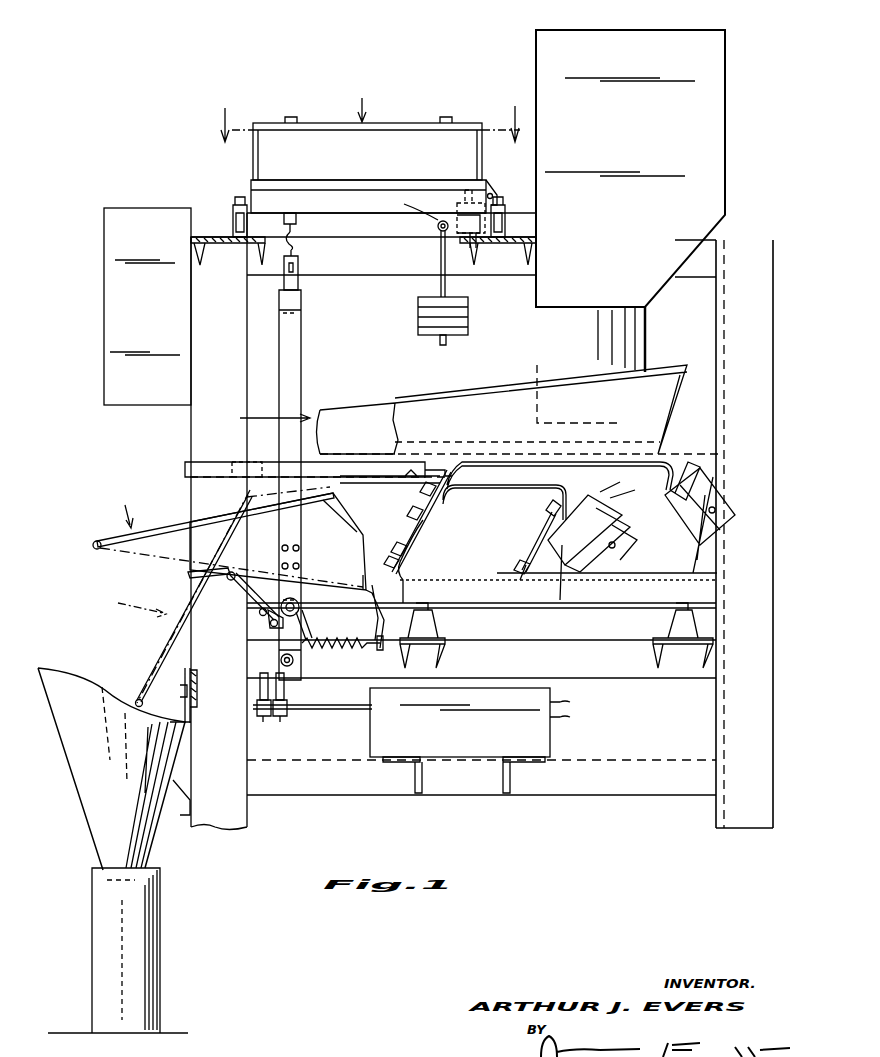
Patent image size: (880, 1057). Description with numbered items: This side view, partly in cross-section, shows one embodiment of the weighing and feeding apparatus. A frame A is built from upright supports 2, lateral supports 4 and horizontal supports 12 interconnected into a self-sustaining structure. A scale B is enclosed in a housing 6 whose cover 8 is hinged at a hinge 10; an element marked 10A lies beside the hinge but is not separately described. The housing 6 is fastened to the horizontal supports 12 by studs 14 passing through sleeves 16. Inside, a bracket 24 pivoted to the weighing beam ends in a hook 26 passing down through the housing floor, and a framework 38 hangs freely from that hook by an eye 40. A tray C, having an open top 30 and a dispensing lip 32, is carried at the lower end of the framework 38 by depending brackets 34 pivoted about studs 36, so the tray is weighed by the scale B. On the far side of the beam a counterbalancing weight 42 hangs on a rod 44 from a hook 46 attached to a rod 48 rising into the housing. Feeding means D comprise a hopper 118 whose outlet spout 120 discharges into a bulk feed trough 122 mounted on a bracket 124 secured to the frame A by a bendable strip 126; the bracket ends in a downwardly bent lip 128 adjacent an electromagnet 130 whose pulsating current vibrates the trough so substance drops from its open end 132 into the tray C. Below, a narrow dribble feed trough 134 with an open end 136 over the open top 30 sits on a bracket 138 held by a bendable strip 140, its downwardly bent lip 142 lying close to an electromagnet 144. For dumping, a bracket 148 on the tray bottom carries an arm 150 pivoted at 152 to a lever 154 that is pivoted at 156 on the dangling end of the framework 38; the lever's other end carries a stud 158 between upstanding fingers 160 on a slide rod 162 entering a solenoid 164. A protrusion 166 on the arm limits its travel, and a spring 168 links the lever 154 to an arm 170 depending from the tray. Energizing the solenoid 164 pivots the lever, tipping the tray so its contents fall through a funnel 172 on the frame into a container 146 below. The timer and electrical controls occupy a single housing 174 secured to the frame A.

The upright supports 2 is at (716, 818).
The lateral supports 4 is at (624, 670).
The housing 6 is at (262, 196).
The cover 8 is at (393, 142).
The hinge 10 is at (496, 192).
The switch box 10A is at (470, 240).
The horizontal supports 12 is at (226, 246).
The studs 14 is at (232, 205).
The sleeves 16 is at (234, 222).
The bracket 24 is at (298, 220).
The hook 26 is at (296, 238).
The open top 30 is at (168, 520).
The dispensing lip 32 is at (94, 550).
The depending brackets 34 is at (318, 595).
The studs 36 is at (300, 607).
The framework 38 is at (298, 345).
The eye 40 is at (297, 262).
The counterbalancing weight 42 is at (458, 332).
The rod 44 is at (440, 283).
The hook 46 is at (437, 228).
The rod 48 is at (410, 206).
The hopper 118 is at (705, 133).
The outlet spout 120 is at (648, 340).
The bulk feed trough 122 is at (688, 398).
The bracket 124 is at (575, 462).
The bendable strip 126 is at (422, 535).
The downwardly bent lip 128 is at (674, 462).
The electromagnet 130 is at (686, 530).
The open end 132 is at (320, 412).
The dribble feed trough 134 is at (255, 475).
The open end 136 is at (186, 465).
The bracket 138 is at (502, 490).
The bendable strip 140 is at (540, 536).
The downwardly bent lip 142 is at (556, 530).
The electromagnet 144 is at (640, 515).
The container 146 is at (158, 966).
The bracket 148 is at (190, 575).
The arm 150 is at (240, 588).
The pivot 152 is at (262, 622).
The lever 154 is at (310, 627).
The pivot 156 is at (304, 655).
The stud 158 is at (286, 692).
The upstanding fingers 160 is at (265, 717).
The slide rod 162 is at (330, 712).
The solenoid 164 is at (550, 743).
The protrusion 166 is at (279, 660).
The spring 168 is at (376, 648).
The arm 170 is at (400, 600).
The funnel 172 is at (56, 680).
The housing 174 is at (105, 235).
The frame A is at (365, 278).
The scale B is at (355, 103).
The tray C is at (137, 551).
The feeding means D is at (266, 415).